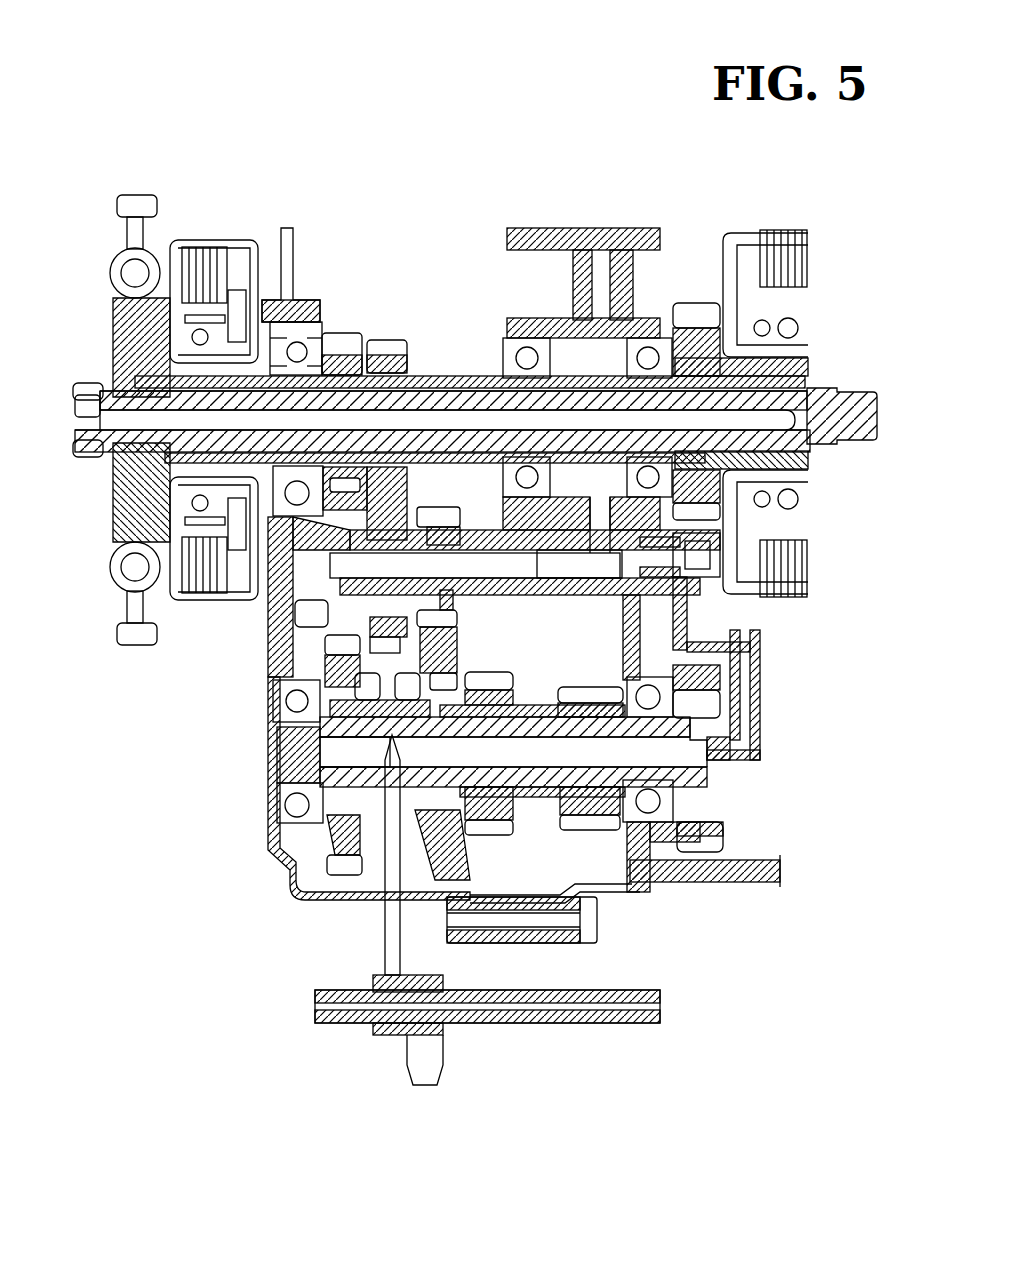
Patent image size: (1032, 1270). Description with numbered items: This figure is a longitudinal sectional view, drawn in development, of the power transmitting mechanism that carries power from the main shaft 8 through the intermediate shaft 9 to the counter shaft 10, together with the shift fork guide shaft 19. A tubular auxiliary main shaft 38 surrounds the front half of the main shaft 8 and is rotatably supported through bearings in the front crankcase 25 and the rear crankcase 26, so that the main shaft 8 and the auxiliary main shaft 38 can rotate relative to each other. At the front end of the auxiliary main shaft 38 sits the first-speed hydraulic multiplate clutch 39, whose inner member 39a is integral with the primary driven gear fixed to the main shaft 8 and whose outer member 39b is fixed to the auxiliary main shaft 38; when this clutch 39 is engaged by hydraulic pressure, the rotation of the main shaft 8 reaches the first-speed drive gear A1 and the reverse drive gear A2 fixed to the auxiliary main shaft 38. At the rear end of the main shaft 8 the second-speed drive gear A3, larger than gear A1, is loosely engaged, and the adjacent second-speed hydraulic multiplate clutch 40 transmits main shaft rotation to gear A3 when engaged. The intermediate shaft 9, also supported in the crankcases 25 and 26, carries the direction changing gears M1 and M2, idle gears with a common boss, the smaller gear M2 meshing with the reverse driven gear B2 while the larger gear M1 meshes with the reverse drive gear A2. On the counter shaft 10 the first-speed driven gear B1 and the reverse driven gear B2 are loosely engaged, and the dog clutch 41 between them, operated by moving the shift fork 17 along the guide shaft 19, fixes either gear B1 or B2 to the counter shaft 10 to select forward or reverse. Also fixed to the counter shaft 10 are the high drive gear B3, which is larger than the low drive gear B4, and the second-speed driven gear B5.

The main shaft 8 is at (570, 385).
The intermediate shaft 9 is at (470, 572).
The counter shaft 10 is at (513, 752).
The shift fork 17 is at (393, 922).
The guide shaft 19 is at (618, 990).
The front crankcase 25 is at (290, 625).
The rear crankcase 26 is at (710, 882).
The auxiliary main shaft 38 is at (447, 375).
The first-speed hydraulic multiplate clutch 39 is at (180, 409).
The inner member 39a is at (178, 315).
The outer member 39b is at (243, 240).
The second-speed hydraulic multiplate clutch 40 is at (841, 259).
The dog clutch 41 is at (390, 695).
The first-speed drive gear A1 is at (345, 340).
The reverse drive gear A2 is at (395, 348).
The second-speed drive gear A3 is at (693, 325).
The direction changing gear M1 is at (400, 487).
The direction changing gear M2 is at (450, 517).
The first-speed driven gear B1 is at (327, 865).
The reverse driven gear B2 is at (455, 885).
The high drive gear B3 is at (497, 822).
The low drive gear B4 is at (580, 815).
The second-speed driven gear B5 is at (720, 842).